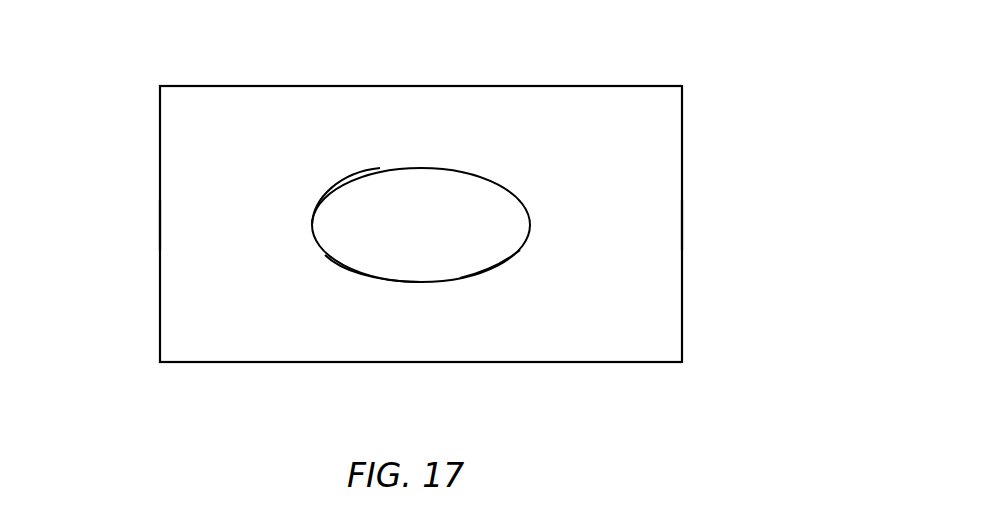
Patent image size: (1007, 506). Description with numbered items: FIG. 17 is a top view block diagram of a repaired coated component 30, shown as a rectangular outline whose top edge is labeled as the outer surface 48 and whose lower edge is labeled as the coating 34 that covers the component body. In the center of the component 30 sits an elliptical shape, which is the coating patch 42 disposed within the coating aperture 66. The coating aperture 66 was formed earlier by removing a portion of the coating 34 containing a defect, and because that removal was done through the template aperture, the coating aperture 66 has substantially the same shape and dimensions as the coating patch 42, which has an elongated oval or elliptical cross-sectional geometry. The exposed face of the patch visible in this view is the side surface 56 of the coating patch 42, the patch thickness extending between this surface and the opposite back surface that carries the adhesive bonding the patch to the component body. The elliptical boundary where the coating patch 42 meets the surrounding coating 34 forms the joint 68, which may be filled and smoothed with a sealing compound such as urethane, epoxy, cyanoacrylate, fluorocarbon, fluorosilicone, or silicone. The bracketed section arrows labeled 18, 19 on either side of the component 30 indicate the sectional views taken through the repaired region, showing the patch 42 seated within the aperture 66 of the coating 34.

The coated component 30 is at (468, 186).
The outer surface 48 is at (626, 104).
The coating 34 is at (669, 340).
The side surface 56 is at (420, 188).
The joint 68 is at (358, 176).
The coating patch 42 is at (355, 247).
The coating aperture 66 is at (499, 272).
The section line 18 is at (419, 258).
The section line 19 is at (419, 258).